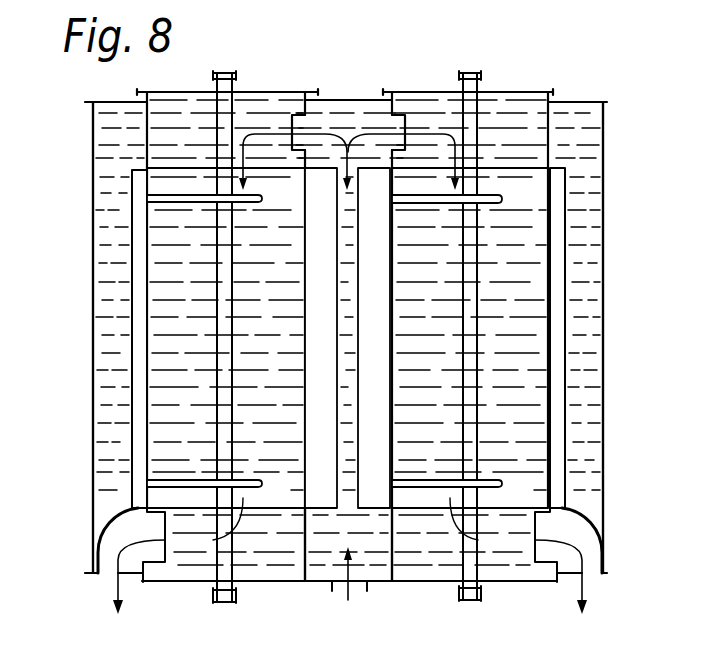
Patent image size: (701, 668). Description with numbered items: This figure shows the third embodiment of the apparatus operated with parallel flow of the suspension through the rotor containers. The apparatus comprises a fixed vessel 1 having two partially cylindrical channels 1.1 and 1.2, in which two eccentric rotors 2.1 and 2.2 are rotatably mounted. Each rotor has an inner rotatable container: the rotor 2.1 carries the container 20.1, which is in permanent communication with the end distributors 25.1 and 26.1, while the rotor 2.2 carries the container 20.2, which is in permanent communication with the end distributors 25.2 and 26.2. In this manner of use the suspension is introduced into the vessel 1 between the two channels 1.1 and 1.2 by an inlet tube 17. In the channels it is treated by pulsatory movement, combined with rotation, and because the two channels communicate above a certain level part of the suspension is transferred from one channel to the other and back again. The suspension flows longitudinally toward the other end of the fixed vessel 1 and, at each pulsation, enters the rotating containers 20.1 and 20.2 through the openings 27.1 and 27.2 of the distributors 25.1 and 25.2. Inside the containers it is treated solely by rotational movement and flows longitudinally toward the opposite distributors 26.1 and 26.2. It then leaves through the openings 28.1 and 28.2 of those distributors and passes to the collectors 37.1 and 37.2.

The vessel 1 is at (608, 217).
The partially cylindrical channel 1.1 is at (107, 438).
The partially cylindrical channel 1.2 is at (590, 423).
The eccentric rotor 2.1 is at (132, 315).
The eccentric rotor 2.2 is at (565, 338).
The inner rotatable container 20.1 is at (148, 373).
The inner rotatable container 20.2 is at (549, 394).
The end distributor 25.1 is at (145, 137).
The end distributor 25.2 is at (550, 117).
The opening 27.1 is at (300, 122).
The opening 27.2 is at (406, 122).
The collector 37.1 is at (105, 532).
The collector 37.2 is at (590, 523).
The opening 28.1 is at (170, 560).
The opening 28.2 is at (530, 557).
The end distributor 26.1 is at (305, 558).
The end distributor 26.2 is at (392, 560).
The inlet tube 17 is at (335, 590).